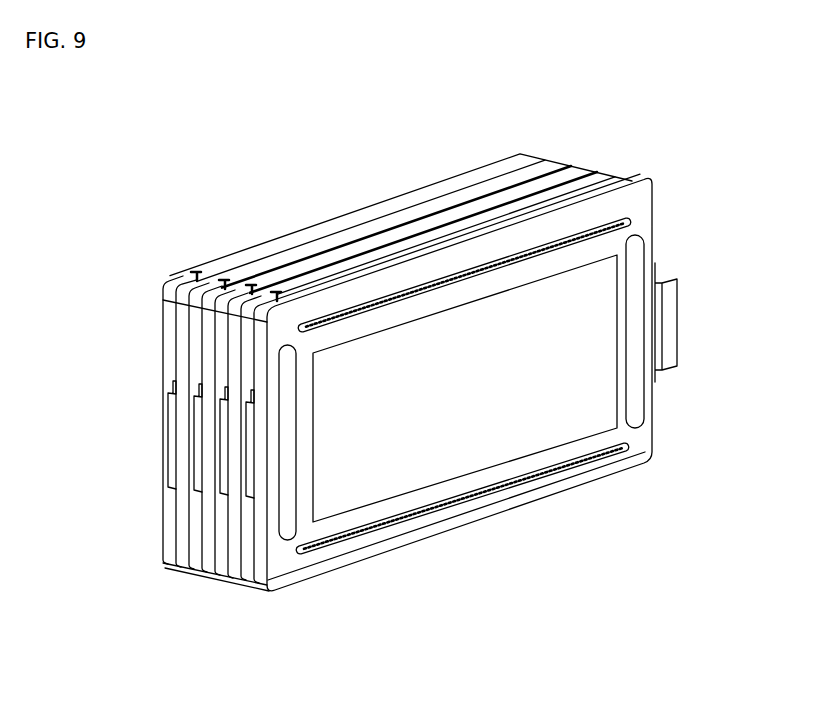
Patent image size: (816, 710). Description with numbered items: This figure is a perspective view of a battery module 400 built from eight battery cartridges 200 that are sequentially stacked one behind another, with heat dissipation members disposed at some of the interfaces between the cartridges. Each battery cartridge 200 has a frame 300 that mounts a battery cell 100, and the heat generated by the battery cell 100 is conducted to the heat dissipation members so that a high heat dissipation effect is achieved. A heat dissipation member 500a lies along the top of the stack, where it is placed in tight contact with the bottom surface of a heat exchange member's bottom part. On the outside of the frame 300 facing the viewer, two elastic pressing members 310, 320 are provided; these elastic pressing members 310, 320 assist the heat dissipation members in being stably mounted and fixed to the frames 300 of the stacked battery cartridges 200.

The battery module 400 is at (74, 124).
The battery cartridge 200 is at (178, 275).
The heat dissipation member 500a is at (352, 213).
The frame 300 is at (291, 566).
The elastic pressing member 320 is at (606, 225).
The elastic pressing member 310 is at (410, 518).
The battery cell 100 is at (596, 402).